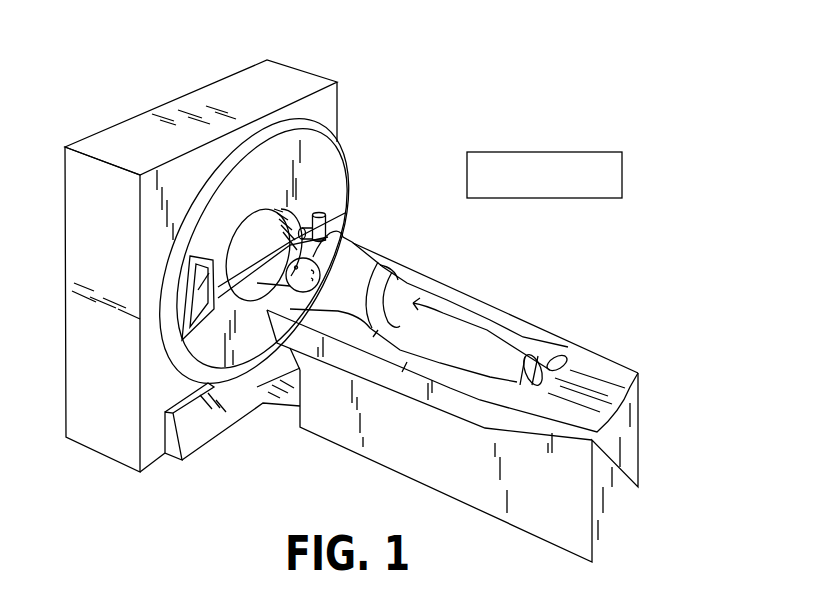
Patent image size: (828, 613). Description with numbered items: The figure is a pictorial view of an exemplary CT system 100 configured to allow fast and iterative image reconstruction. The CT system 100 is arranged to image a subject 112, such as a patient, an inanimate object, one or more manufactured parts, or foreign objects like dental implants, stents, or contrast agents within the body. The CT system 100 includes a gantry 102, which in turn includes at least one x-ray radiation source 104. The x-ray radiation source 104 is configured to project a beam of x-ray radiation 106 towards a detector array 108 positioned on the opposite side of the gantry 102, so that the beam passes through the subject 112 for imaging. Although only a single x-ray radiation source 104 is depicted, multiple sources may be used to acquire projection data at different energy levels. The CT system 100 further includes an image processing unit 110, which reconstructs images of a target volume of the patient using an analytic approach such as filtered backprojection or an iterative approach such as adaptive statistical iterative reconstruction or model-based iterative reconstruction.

The CT system 100 is at (575, 46).
The gantry 102 is at (462, 177).
The x-ray radiation source 104 is at (330, 228).
The beam of x-ray radiation 106 is at (240, 264).
The detector array 108 is at (202, 318).
The image processing unit 110 is at (588, 152).
The subject 112 is at (360, 280).